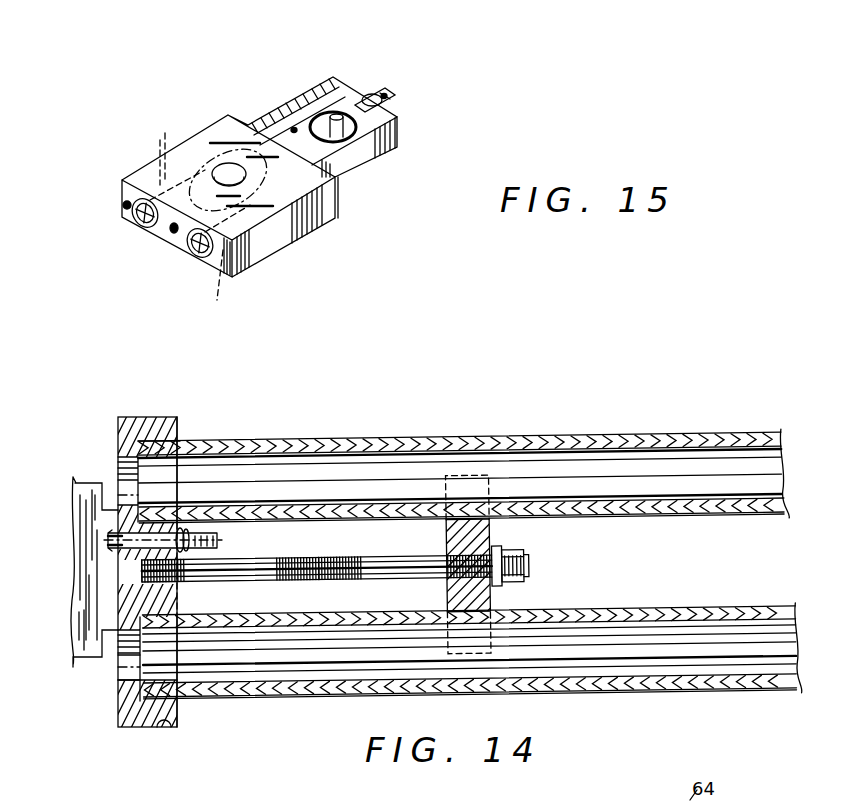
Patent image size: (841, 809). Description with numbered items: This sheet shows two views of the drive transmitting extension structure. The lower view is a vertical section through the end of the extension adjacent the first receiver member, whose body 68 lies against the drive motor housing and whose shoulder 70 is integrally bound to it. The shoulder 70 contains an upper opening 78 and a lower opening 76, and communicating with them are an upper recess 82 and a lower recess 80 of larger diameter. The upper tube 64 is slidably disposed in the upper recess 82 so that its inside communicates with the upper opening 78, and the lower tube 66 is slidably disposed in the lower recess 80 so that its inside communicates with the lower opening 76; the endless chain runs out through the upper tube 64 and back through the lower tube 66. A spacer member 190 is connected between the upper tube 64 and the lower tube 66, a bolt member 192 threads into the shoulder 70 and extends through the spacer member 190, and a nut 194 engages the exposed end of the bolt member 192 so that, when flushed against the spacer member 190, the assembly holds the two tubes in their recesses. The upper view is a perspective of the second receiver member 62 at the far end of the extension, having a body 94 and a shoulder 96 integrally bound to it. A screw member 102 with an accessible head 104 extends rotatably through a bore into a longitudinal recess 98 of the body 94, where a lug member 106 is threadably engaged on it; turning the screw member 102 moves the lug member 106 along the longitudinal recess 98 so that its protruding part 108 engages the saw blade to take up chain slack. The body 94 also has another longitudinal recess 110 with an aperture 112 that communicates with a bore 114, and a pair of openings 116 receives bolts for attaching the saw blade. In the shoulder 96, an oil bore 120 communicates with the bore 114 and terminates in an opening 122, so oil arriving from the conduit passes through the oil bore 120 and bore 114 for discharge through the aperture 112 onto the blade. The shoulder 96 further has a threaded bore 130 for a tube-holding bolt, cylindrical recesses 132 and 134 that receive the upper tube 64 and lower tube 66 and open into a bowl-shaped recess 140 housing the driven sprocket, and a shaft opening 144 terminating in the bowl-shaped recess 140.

In FIG. 15, the second receiver member 62 is at (261, 114).
In FIG. 14, the upper tube 64 is at (520, 435).
In FIG. 14, the lower tube 66 is at (585, 694).
In FIG. 14, the body 68 is at (93, 632).
In FIG. 14, the shoulder 70 is at (118, 420).
In FIG. 14, the lower opening 76 is at (118, 672).
In FIG. 14, the upper opening 78 is at (118, 478).
In FIG. 14, the lower recess 80 is at (174, 712).
In FIG. 14, the upper recess 82 is at (178, 442).
In FIG. 15, the body 94 is at (390, 135).
In FIG. 15, the shoulder 96 is at (282, 195).
In FIG. 15, the clamp member 98 is at (392, 97).
In FIG. 15, the screw member 102 is at (333, 220).
In FIG. 15, the head 104 is at (396, 97).
In FIG. 15, the lug member 106 is at (323, 100).
In FIG. 15, the protruding part 108 is at (386, 95).
In FIG. 15, the longitudinal recess 110 is at (348, 80).
In FIG. 15, the aperture 112 is at (302, 97).
In FIG. 15, the bore 114 is at (262, 188).
In FIG. 15, the openings 116 is at (385, 95).
In FIG. 15, the oil bore 120 is at (200, 171).
In FIG. 15, the opening 122 is at (127, 207).
In FIG. 15, the threaded bore 130 is at (174, 234).
In FIG. 15, the recess 132 is at (147, 232).
In FIG. 15, the recess 134 is at (203, 262).
In FIG. 15, the bowl-shaped recess 140 is at (225, 286).
In FIG. 15, the shaft opening 144 is at (228, 163).
In FIG. 14, the spacer member 190 is at (478, 590).
In FIG. 14, the bolt member 192 is at (356, 567).
In FIG. 14, the nut 194 is at (548, 540).